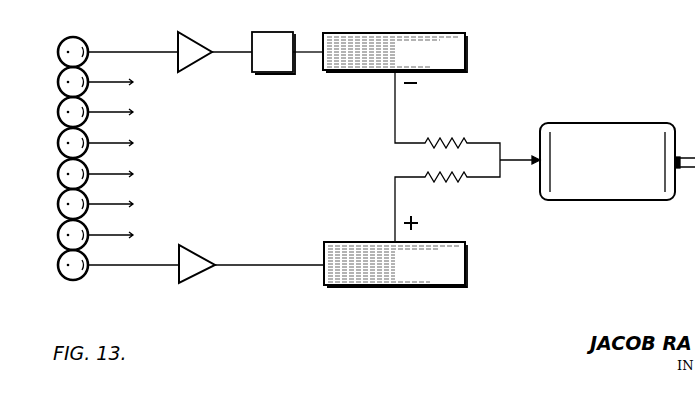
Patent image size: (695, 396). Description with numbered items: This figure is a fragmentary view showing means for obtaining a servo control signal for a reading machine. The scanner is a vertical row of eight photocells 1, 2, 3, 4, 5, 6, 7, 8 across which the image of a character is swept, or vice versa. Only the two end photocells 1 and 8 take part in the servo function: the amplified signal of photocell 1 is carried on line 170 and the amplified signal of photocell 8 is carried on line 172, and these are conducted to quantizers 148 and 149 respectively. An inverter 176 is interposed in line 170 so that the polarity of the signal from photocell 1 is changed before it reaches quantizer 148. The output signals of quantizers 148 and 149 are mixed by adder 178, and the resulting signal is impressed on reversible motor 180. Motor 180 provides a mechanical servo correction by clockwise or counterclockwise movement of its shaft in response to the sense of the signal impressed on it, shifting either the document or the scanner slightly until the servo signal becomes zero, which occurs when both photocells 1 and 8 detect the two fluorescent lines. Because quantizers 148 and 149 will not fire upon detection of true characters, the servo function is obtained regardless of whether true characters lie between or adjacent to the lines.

The photocell 1 is at (107, 52).
The photocell 2 is at (85, 82).
The photocell 3 is at (85, 112).
The photocell 4 is at (85, 143).
The photocell 5 is at (85, 174).
The photocell 6 is at (85, 204).
The photocell 7 is at (85, 235).
The photocell 8 is at (108, 265).
The line 170 is at (228, 53).
The inverter 176 is at (273, 74).
The quantizer 148 is at (361, 70).
The adder 178 is at (447, 137).
The reversible motor 180 is at (587, 122).
The line 172 is at (225, 265).
The quantizer 149 is at (345, 242).